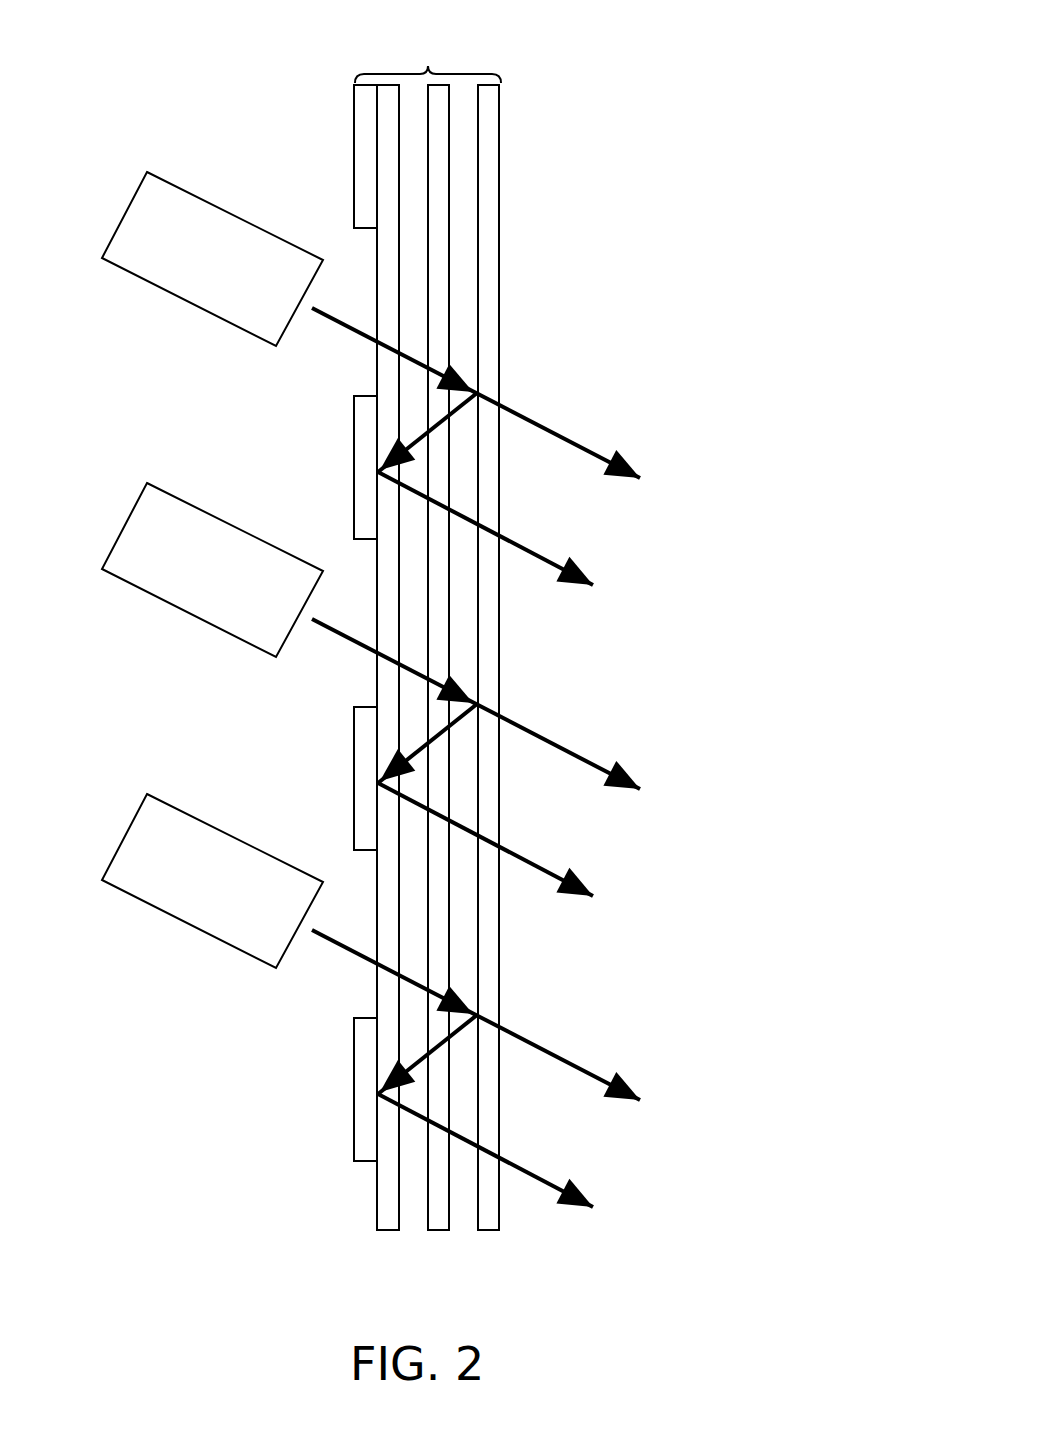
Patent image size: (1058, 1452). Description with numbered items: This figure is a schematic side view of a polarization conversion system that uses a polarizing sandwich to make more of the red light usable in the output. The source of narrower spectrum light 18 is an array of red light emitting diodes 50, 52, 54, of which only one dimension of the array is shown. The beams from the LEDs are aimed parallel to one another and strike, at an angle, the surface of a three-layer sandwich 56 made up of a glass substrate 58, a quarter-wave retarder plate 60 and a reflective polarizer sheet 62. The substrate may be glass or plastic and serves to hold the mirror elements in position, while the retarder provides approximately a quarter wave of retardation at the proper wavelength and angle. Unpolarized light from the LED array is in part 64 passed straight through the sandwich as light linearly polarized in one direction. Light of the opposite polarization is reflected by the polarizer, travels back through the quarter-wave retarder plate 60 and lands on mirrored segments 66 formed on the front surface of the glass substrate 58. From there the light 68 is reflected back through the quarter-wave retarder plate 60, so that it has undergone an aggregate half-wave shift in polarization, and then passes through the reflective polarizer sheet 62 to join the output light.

The source of narrower spectrum light 18 is at (667, 1172).
The red light emitting diode 50 is at (180, 302).
The red light emitting diode 52 is at (180, 613).
The red light emitting diode 54 is at (180, 924).
The three-layer sandwich 56 is at (428, 66).
The glass substrate 58 is at (385, 1231).
The quarter-wave retarder plate 60 is at (437, 1231).
The reflective polarizer sheet 62 is at (498, 1210).
The passed light 64 is at (550, 1052).
The mirrored segments 66 is at (353, 1092).
The reflected light 68 is at (463, 1137).